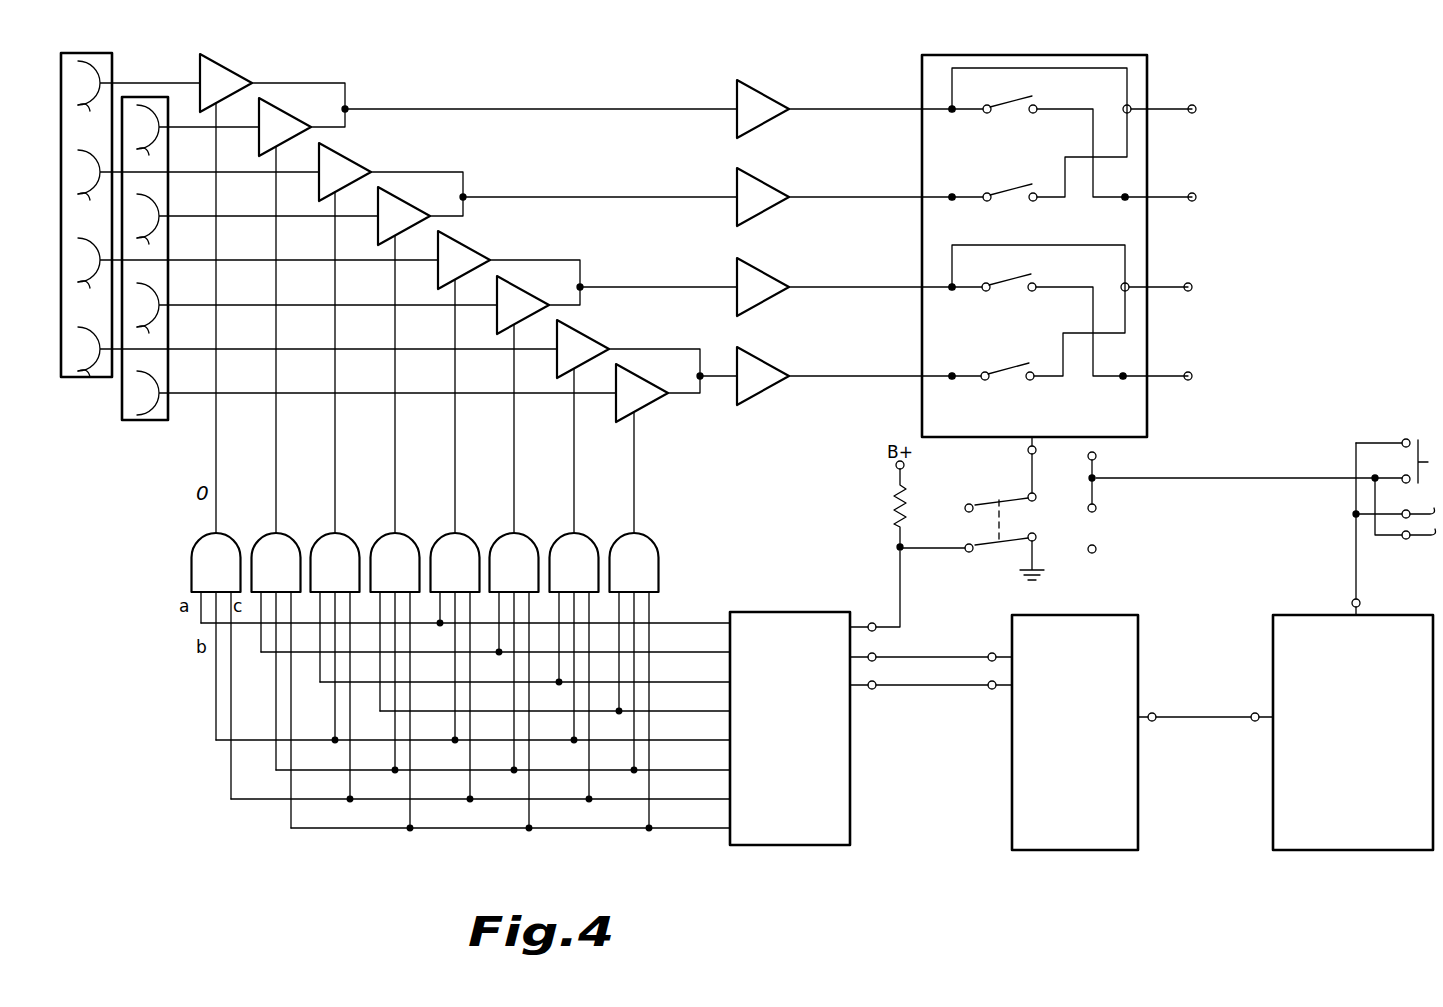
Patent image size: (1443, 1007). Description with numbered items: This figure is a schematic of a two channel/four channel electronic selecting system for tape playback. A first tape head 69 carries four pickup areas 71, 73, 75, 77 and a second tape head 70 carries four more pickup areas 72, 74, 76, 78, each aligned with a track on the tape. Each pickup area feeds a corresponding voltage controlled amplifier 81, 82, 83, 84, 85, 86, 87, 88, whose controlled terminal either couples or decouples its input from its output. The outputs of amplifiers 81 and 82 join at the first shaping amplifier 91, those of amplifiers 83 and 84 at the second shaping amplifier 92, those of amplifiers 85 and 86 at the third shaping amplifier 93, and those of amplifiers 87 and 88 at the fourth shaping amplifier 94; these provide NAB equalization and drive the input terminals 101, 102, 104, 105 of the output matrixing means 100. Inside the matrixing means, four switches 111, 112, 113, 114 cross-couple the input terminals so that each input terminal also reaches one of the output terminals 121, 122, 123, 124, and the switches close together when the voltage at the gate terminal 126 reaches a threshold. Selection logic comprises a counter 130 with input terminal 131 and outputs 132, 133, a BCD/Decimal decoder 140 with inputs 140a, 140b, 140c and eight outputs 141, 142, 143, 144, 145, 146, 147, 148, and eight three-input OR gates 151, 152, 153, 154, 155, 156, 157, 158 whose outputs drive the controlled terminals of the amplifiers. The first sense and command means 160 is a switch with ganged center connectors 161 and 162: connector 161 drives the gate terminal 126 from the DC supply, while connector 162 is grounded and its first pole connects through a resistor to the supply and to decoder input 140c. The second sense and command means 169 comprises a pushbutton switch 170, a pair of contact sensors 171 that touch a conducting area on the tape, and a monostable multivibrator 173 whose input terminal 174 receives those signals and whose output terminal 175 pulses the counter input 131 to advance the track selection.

The first tape head 69 is at (73, 377).
The second tape head 70 is at (157, 420).
The pickup area 71 is at (91, 108).
The pickup area 72 is at (150, 149).
The pickup area 73 is at (91, 197).
The pickup area 74 is at (150, 238).
The pickup area 75 is at (91, 286).
The pickup area 76 is at (150, 327).
The pickup area 77 is at (93, 378).
The pickup area 78 is at (162, 386).
The first voltage controlled amplifier 81 is at (240, 78).
The second voltage controlled amplifier 82 is at (312, 111).
The third voltage controlled amplifier 83 is at (372, 156).
The fourth voltage controlled amplifier 84 is at (431, 200).
The fifth voltage controlled amplifier 85 is at (491, 244).
The sixth voltage controlled amplifier 86 is at (550, 289).
The seventh voltage controlled amplifier 87 is at (610, 333).
The eighth voltage controlled amplifier 88 is at (669, 377).
The first shaping amplifier 91 is at (772, 103).
The second shaping amplifier 92 is at (772, 191).
The third shaping amplifier 93 is at (772, 281).
The fourth shaping amplifier 94 is at (772, 370).
The output matrixing means 100 is at (1153, 93).
The first input terminal 101 is at (952, 113).
The second input terminal 102 is at (952, 201).
The third input terminal 104 is at (952, 291).
The fourth input terminal 105 is at (952, 380).
The first switch 111 is at (1010, 97).
The second switch 112 is at (1010, 184).
The third switch 113 is at (1003, 275).
The fourth switch 114 is at (1000, 366).
The first output terminal 121 is at (1124, 106).
The second output terminal 122 is at (1122, 202).
The third output terminal 123 is at (1121, 285).
The fourth output terminal 124 is at (1120, 381).
The gate terminal 126 is at (1027, 451).
The counter 130 is at (1132, 665).
The counter input terminal 131 is at (1155, 722).
The first counter output terminal 132 is at (992, 653).
The second counter output terminal 133 is at (991, 690).
The BCD/Decimal decoder 140 is at (782, 615).
The first decoder input 140a is at (876, 661).
The second decoder input 140b is at (876, 689).
The third decoder input 140c is at (872, 622).
The first decoder output 141 is at (714, 621).
The second decoder output 142 is at (714, 650).
The third decoder output 143 is at (714, 680).
The fourth decoder output 144 is at (714, 709).
The fifth decoder output 145 is at (714, 738).
The sixth decoder output 146 is at (714, 768).
The seventh decoder output 147 is at (714, 797).
The eighth decoder output 148 is at (714, 826).
The first OR gate 151 is at (208, 541).
The second OR gate 152 is at (268, 541).
The third OR gate 153 is at (327, 541).
The fourth OR gate 154 is at (387, 541).
The fifth OR gate 155 is at (447, 541).
The sixth OR gate 156 is at (506, 541).
The seventh OR gate 157 is at (566, 541).
The eighth OR gate 158 is at (626, 541).
The first sense and command means 160 is at (1040, 508).
The first movable center connector 161 is at (1036, 494).
The second movable center connector 162 is at (1038, 543).
The second sense and command means 169 is at (1395, 503).
The manually activated pushbutton switch 170 is at (1410, 435).
The pair of contact sensors 171 is at (1417, 550).
The monostable multivibrator 173 is at (1333, 616).
The monostable input terminal 174 is at (1352, 598).
The monostable output terminal 175 is at (1255, 712).